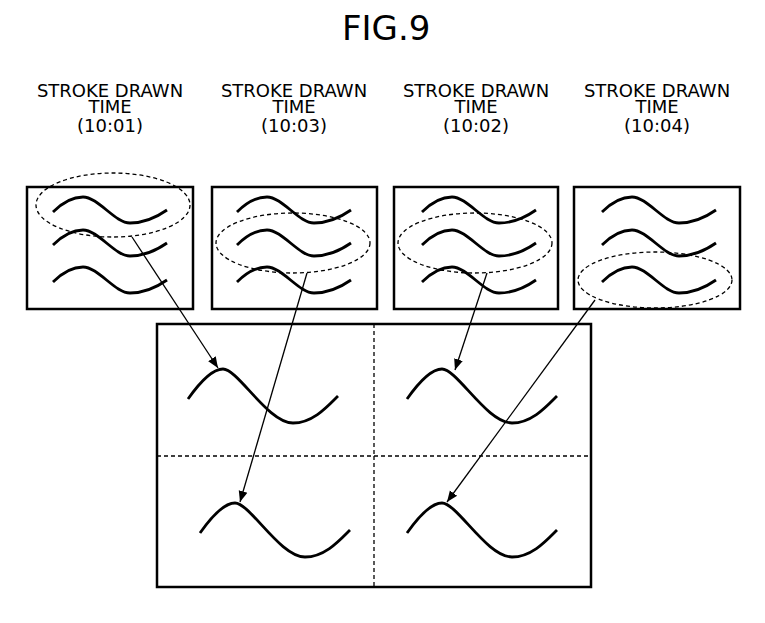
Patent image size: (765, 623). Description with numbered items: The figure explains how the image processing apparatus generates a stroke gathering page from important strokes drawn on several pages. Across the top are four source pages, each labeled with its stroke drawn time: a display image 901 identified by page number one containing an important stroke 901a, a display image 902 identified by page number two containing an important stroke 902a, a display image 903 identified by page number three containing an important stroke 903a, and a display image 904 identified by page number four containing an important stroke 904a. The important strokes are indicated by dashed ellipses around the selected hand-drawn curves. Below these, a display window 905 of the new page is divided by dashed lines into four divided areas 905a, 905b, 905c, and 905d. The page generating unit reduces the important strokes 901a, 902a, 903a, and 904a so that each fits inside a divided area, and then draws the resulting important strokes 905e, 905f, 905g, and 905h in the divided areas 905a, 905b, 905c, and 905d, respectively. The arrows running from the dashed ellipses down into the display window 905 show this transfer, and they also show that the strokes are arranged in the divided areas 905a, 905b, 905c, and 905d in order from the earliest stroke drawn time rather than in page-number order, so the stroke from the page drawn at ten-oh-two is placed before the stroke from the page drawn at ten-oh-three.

The display image 901 is at (143, 187).
The important stroke 901a is at (63, 183).
The display image 902 is at (315, 188).
The important stroke 902a is at (227, 228).
The display image 903 is at (496, 188).
The important stroke 903a is at (410, 228).
The display image 904 is at (677, 188).
The important stroke 904a is at (594, 262).
The display window 905 is at (598, 354).
The divided area 905a is at (168, 434).
The divided area 905b is at (580, 432).
The divided area 905c is at (168, 479).
The divided area 905d is at (580, 477).
The important stroke 905e is at (195, 392).
The important stroke 905f is at (550, 402).
The important stroke 905g is at (200, 532).
The important stroke 905h is at (550, 546).